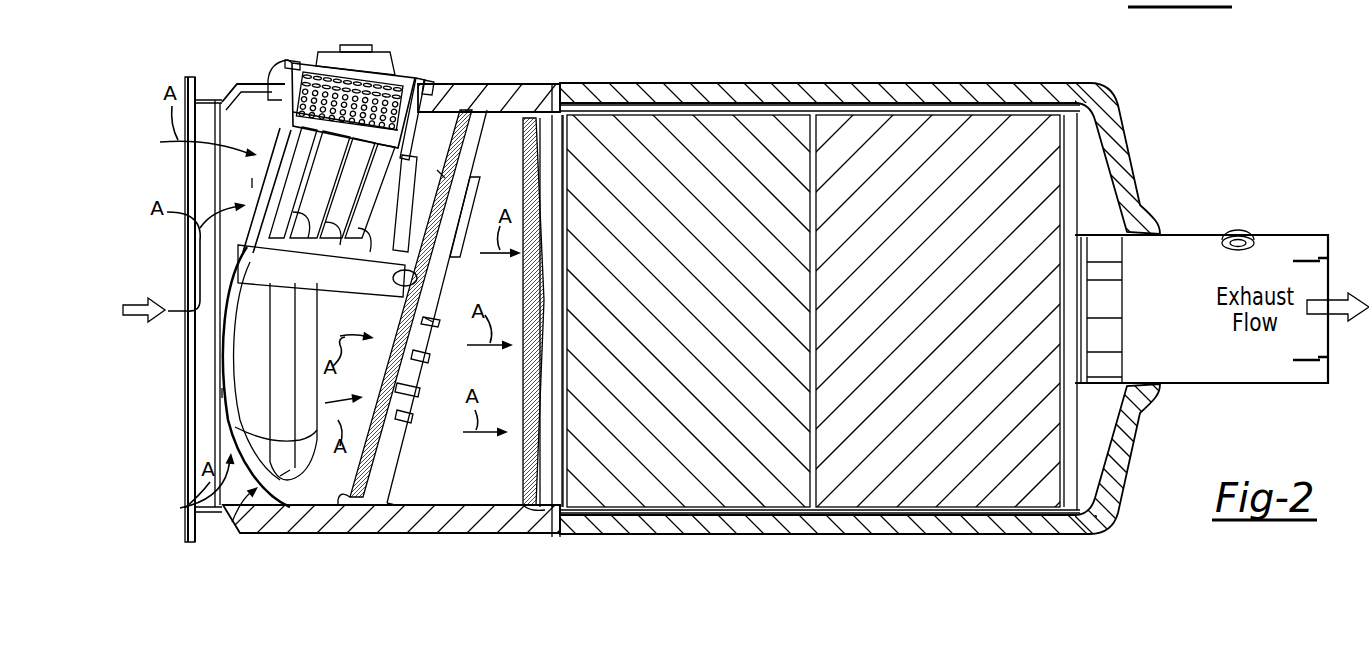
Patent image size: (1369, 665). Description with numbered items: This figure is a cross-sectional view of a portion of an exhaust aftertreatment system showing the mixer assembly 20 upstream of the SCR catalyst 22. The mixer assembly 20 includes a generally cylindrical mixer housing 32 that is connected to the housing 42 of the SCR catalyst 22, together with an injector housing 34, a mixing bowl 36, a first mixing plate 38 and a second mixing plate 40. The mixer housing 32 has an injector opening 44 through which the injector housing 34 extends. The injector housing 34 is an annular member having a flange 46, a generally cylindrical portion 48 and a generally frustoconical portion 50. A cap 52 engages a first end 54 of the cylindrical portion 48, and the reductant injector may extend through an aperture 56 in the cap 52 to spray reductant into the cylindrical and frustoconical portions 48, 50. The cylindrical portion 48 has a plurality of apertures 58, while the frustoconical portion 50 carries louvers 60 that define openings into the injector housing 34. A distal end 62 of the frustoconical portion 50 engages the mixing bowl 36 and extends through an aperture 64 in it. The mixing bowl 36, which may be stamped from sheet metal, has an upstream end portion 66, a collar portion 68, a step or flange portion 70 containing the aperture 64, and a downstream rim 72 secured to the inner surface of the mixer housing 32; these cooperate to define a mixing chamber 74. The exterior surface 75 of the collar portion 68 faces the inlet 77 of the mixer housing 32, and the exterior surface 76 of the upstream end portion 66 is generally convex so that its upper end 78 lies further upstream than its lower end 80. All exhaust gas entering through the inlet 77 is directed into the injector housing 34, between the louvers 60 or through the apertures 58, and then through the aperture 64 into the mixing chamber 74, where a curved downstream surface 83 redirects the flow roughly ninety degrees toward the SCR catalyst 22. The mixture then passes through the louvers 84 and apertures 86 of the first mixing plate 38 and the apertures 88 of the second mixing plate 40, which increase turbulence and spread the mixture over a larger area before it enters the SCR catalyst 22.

The mixer assembly 20 is at (702, 332).
The SCR catalyst 22 is at (705, 332).
The mixer housing 32 is at (515, 527).
The injector housing 34 is at (353, 126).
The mixing bowl 36 is at (226, 497).
The first mixing plate 38 is at (355, 488).
The second mixing plate 40 is at (525, 457).
The housing 42 is at (905, 528).
The injector opening 44 is at (300, 64).
The flange 46 is at (284, 93).
The cylindrical portion 48 is at (424, 84).
The frustoconical portion 50 is at (250, 182).
The cap 52 is at (335, 60).
The first end 54 is at (393, 77).
The aperture 56 is at (360, 64).
The apertures 58 is at (318, 82).
The louvers 60 is at (322, 270).
The distal end 62 is at (398, 297).
The aperture 64 is at (410, 270).
The upstream end portion 66 is at (213, 392).
The collar portion 68 is at (488, 147).
The flange portion 70 is at (247, 250).
The downstream rim 72 is at (548, 125).
The mixing chamber 74 is at (315, 413).
The exterior surface 75 is at (437, 175).
The exterior surface 76 is at (228, 357).
The inlet 77 is at (187, 463).
The upper end 78 is at (244, 250).
The lower end 80 is at (266, 490).
The downstream surface 83 is at (282, 480).
The louvers 84 is at (492, 157).
The apertures 86 is at (427, 320).
The apertures 88 is at (542, 268).